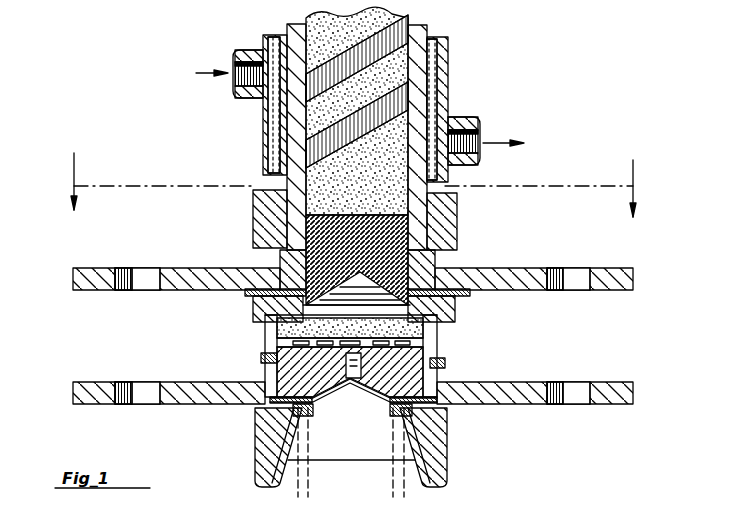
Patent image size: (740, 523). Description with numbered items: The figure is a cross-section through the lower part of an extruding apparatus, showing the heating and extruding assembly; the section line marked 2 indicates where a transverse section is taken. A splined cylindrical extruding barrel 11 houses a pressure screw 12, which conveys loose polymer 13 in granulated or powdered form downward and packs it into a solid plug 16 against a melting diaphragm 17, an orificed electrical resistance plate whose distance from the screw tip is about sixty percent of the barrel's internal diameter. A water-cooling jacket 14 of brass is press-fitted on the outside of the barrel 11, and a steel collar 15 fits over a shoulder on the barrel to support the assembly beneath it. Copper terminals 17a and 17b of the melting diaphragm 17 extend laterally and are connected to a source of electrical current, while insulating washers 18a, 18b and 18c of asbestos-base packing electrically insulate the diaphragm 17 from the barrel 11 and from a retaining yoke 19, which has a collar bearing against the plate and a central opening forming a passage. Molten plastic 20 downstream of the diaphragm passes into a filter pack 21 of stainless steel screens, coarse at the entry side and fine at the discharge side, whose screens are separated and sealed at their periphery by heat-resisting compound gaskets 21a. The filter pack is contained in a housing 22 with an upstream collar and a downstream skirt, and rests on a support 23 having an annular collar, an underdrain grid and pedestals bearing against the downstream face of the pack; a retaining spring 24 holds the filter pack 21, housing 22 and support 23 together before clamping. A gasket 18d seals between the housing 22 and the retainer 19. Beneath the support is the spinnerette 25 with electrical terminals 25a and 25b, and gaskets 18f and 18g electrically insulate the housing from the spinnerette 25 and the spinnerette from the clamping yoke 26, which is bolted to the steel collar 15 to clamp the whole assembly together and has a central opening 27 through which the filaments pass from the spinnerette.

The section line 2- 2 is at (351, 172).
The extruding barrel 11 is at (297, 34).
The pressure screw 12 is at (396, 24).
The loose polymer 13 is at (392, 60).
The water-cooling jacket 14 is at (265, 140).
The steel collar 15 is at (253, 198).
The solid plug 16 is at (415, 230).
The melting diaphragm 17 is at (290, 252).
The copper terminal 17a is at (84, 272).
The copper terminal 17b is at (620, 274).
The insulating washer 18a is at (432, 248).
The insulating washer 18b is at (428, 262).
The insulating washer 18c is at (452, 294).
The gasket 18d is at (455, 312).
The gasket 18f is at (441, 392).
The gasket 18g is at (428, 414).
The retaining yoke 19 is at (265, 320).
The molten plastic 20 is at (253, 304).
The filter pack 21 is at (277, 328).
The compound gaskets 21a is at (425, 343).
The filter pack housing 22 is at (277, 352).
The support 23 is at (271, 372).
The retaining spring 24 is at (261, 358).
The spinnerette 25 is at (340, 396).
The electrical terminal 25a is at (90, 387).
The electrical terminal 25b is at (616, 389).
The yoke 26 is at (444, 460).
The outlet bore 27 is at (398, 482).